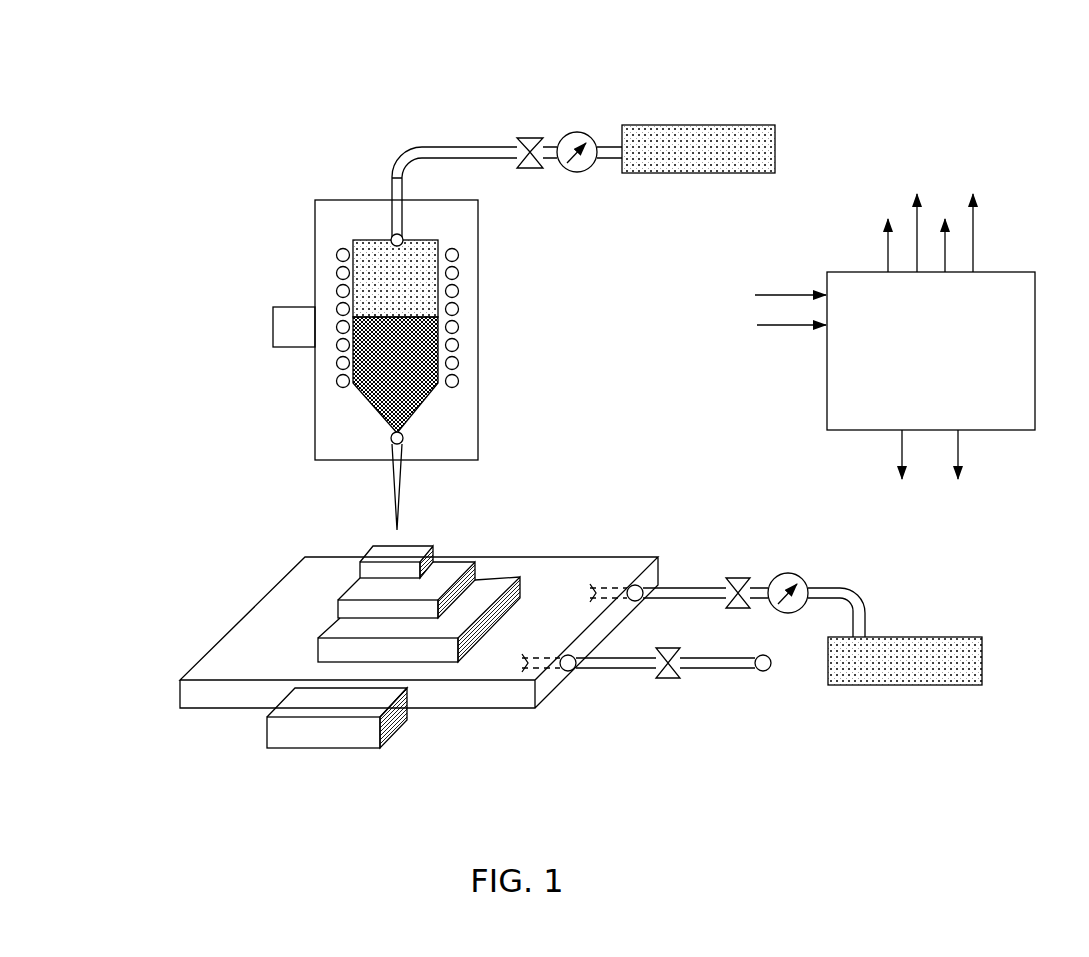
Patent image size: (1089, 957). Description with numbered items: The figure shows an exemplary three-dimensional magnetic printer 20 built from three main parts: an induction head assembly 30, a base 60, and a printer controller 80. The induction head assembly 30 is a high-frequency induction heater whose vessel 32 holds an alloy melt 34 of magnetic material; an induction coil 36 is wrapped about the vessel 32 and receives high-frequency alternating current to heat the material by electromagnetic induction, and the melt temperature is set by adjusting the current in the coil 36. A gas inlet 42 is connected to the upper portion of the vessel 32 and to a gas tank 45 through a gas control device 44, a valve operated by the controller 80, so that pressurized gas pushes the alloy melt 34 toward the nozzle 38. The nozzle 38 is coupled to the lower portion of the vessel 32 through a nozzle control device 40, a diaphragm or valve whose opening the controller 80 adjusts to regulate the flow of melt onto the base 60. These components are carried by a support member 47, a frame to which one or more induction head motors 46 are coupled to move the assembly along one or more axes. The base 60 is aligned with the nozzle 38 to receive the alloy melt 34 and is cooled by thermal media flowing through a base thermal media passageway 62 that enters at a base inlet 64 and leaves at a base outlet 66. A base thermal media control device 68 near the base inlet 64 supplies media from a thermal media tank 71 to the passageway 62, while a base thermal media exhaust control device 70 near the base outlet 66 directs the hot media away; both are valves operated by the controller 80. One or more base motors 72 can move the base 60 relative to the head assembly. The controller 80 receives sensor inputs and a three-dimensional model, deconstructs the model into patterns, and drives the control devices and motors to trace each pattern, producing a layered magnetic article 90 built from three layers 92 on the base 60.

The 3D magnetic printer 20 is at (183, 97).
The induction head assembly 30 is at (380, 103).
The vessel 32 is at (382, 242).
The alloy melt 34 is at (375, 392).
The induction coil 36 is at (337, 272).
The nozzle 38 is at (390, 478).
The nozzle control device 40 is at (390, 438).
The gas inlet 42 is at (404, 240).
The gas control device 44 is at (530, 138).
The gas tank 45 is at (720, 125).
The induction head motor 46 is at (273, 325).
The support member 47 is at (315, 238).
The base 60 is at (290, 570).
The base thermal media passageway 62 is at (612, 597).
The base inlet 64 is at (641, 599).
The base outlet 66 is at (574, 669).
The base thermal media control device 68 is at (740, 578).
The base thermal media exhaust control device 70 is at (668, 678).
The thermal media tank 71 is at (890, 685).
The base motor 72 is at (265, 728).
The 3D printer controller 80 is at (837, 338).
The layered magnetic article 90 is at (458, 547).
The layers 92 is at (318, 648).